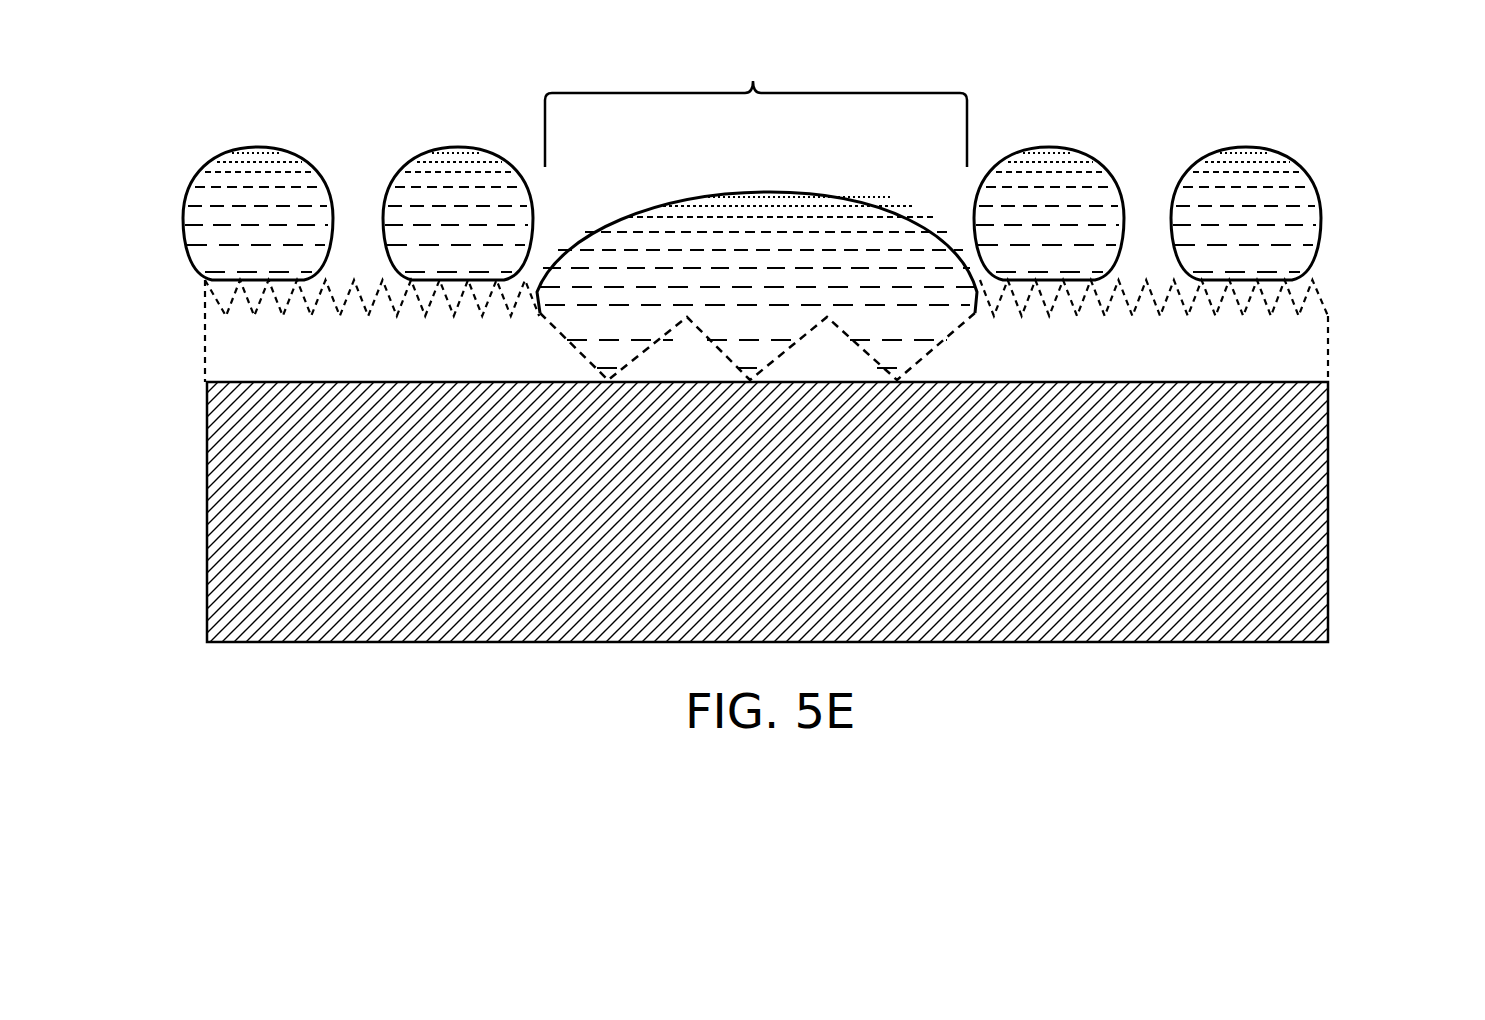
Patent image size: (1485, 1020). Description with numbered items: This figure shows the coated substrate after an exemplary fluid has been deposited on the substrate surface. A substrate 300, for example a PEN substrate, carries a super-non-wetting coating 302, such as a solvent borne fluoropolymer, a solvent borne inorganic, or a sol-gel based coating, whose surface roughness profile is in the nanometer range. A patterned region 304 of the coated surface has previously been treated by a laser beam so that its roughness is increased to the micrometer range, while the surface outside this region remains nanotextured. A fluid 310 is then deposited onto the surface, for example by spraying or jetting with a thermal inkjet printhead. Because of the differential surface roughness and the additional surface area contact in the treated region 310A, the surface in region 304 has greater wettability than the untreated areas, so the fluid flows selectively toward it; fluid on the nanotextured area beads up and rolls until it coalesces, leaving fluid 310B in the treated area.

The substrate 300 is at (207, 469).
The super-non-wetting coating 302 is at (260, 345).
The region 304 is at (756, 108).
The fluid 310 is at (1345, 212).
The treated region 310A is at (455, 145).
The fluid remaining in the treated area 310B is at (797, 192).